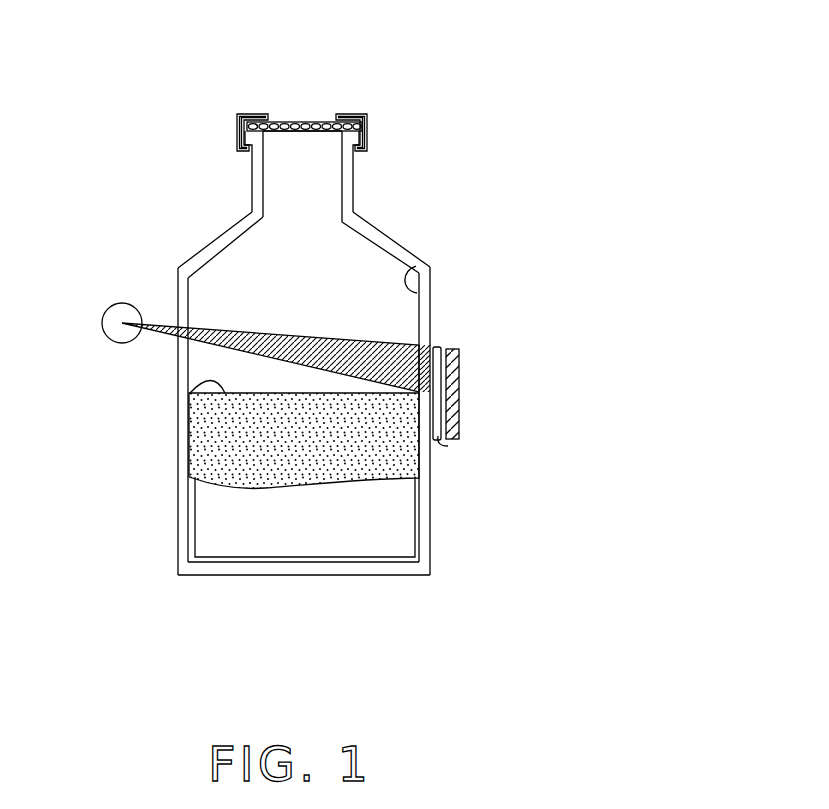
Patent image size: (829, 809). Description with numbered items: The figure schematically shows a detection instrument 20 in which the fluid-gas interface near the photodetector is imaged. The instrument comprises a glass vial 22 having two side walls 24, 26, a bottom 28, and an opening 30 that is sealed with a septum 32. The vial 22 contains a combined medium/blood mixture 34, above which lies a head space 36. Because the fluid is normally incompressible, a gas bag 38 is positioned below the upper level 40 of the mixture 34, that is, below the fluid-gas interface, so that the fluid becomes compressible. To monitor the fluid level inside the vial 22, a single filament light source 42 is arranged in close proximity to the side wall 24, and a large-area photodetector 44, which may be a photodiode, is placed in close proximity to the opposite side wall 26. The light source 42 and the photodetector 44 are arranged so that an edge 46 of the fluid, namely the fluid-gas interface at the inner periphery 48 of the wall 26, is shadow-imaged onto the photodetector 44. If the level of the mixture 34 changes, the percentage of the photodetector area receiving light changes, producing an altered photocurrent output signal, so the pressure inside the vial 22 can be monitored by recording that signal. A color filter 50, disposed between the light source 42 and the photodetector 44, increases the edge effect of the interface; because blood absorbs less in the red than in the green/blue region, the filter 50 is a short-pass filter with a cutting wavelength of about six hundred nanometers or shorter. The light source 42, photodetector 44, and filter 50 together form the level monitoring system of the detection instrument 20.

The detection instrument 20 is at (400, 142).
The glass vial 22 is at (446, 270).
The side wall 24 is at (178, 371).
The side wall 26 is at (432, 497).
The bottom 28 is at (293, 562).
The opening 30 is at (303, 145).
The septum 32 is at (300, 122).
The combined medium/blood mixture 34 is at (402, 443).
The head space 36 is at (238, 265).
The gas bag 38 is at (407, 542).
The upper level 40 is at (189, 393).
The single filament light source 42 is at (103, 323).
The large-area photodetector 44 is at (460, 372).
The edge of the fluid 46 is at (434, 346).
The inner periphery 48 is at (409, 281).
The color filter 50 is at (448, 446).